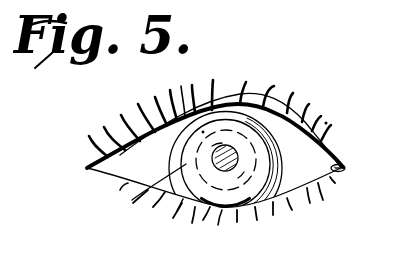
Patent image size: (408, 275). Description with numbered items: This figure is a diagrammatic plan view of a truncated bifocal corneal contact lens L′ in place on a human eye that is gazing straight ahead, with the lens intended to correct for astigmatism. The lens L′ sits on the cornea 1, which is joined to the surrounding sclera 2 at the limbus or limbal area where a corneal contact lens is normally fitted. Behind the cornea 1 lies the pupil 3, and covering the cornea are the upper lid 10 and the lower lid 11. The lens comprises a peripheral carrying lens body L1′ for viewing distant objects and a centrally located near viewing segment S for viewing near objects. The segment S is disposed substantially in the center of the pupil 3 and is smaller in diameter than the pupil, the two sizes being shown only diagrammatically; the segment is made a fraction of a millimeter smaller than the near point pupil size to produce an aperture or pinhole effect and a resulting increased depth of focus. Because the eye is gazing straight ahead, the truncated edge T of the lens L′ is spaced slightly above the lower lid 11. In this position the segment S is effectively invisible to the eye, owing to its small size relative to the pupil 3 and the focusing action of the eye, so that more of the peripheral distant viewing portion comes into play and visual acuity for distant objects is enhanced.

The cornea 1 is at (168, 122).
The sclera 2 is at (158, 166).
The pupil 3 is at (287, 201).
The upper lid 10 is at (324, 138).
The lower lid 11 is at (322, 187).
The bifocal corneal contact lens L′ is at (140, 184).
The carrying lens body L1′ is at (185, 197).
The near viewing segment S is at (238, 158).
The truncated edge T is at (218, 208).